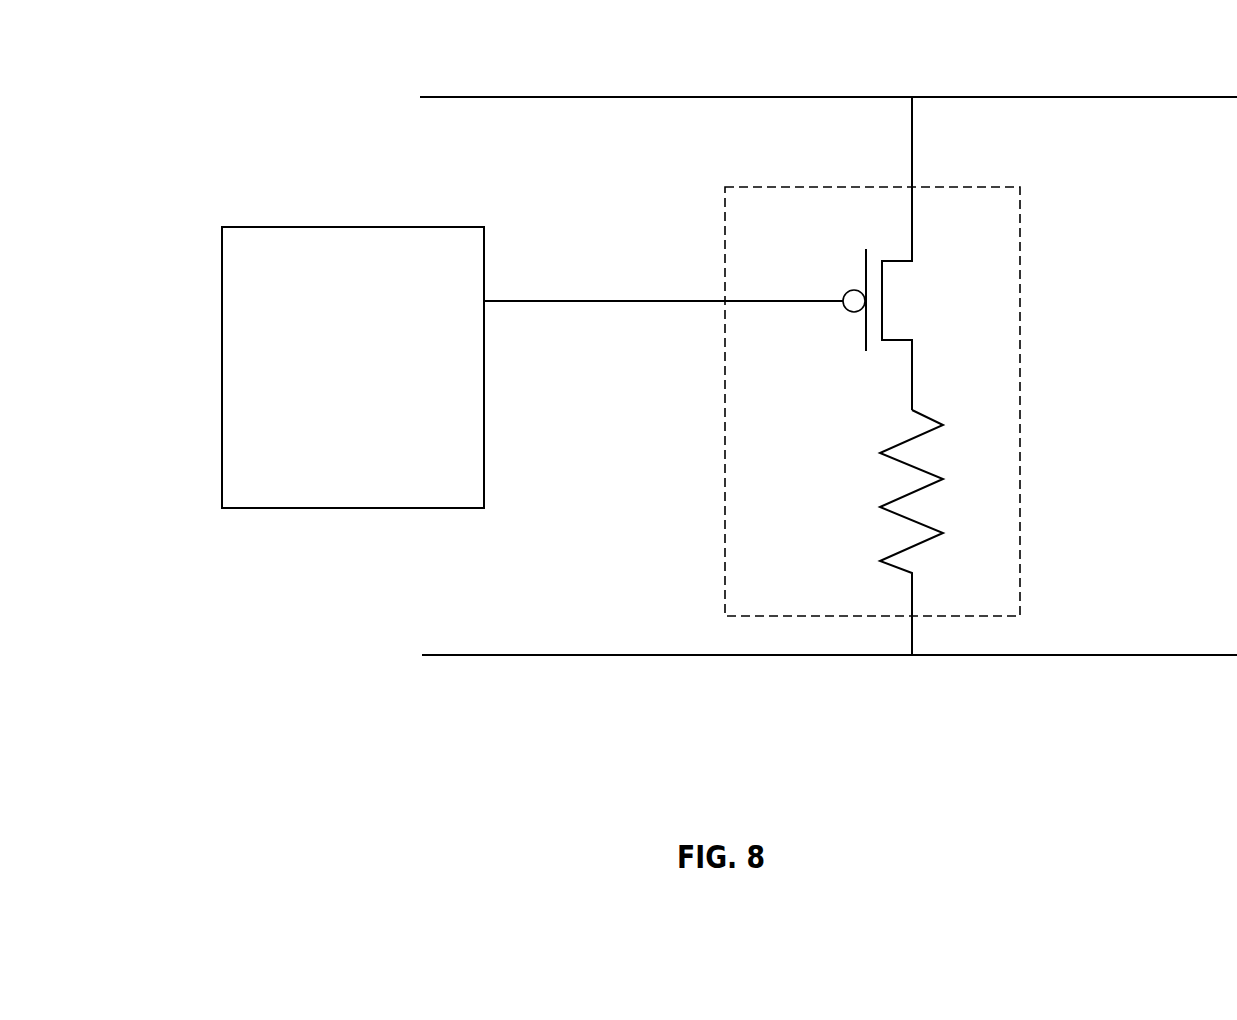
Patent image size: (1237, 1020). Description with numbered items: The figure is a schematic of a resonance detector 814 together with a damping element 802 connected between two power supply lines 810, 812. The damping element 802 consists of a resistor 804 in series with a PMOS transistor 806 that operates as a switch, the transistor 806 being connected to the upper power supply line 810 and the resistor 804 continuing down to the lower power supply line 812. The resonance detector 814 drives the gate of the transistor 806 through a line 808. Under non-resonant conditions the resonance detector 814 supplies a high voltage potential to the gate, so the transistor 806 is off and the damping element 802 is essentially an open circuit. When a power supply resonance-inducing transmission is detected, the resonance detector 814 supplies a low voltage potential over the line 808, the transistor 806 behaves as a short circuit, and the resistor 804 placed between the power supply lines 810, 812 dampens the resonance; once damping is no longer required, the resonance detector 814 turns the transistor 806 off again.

The damping element 802 is at (1020, 306).
The resistor 804 is at (903, 493).
The PMOS transistor 806 is at (866, 259).
The line 808 is at (567, 301).
The power supply line 810 is at (578, 97).
The power supply line 812 is at (549, 655).
The resonance detector 814 is at (315, 227).